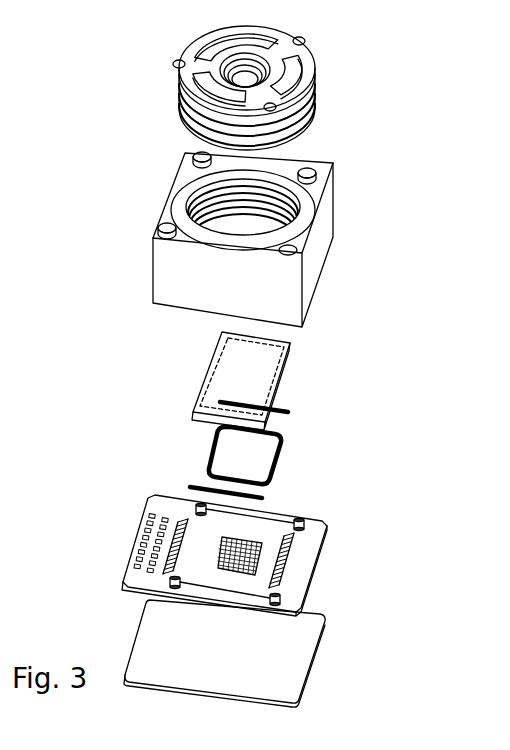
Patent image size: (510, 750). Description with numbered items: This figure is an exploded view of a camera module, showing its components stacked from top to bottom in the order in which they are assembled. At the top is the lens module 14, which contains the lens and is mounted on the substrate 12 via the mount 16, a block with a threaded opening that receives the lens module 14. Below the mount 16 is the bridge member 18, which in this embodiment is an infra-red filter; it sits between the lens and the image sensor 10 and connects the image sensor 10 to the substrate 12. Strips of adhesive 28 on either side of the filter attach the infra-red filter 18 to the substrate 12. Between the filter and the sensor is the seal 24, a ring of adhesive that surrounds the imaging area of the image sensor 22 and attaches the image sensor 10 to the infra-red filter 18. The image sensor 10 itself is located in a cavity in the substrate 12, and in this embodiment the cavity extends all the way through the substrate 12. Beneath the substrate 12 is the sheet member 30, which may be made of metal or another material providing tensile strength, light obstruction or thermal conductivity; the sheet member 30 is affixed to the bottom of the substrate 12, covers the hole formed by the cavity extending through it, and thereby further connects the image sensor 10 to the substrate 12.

The lens module 14 is at (303, 95).
The mount 16 is at (313, 243).
The bridge member 18 is at (238, 375).
The adhesive 28 is at (288, 412).
The seal 24 is at (273, 457).
The image sensor 10 is at (257, 527).
The imaging area of the image sensor 22 is at (222, 542).
The substrate 12 is at (297, 590).
The sheet member 30 is at (282, 670).